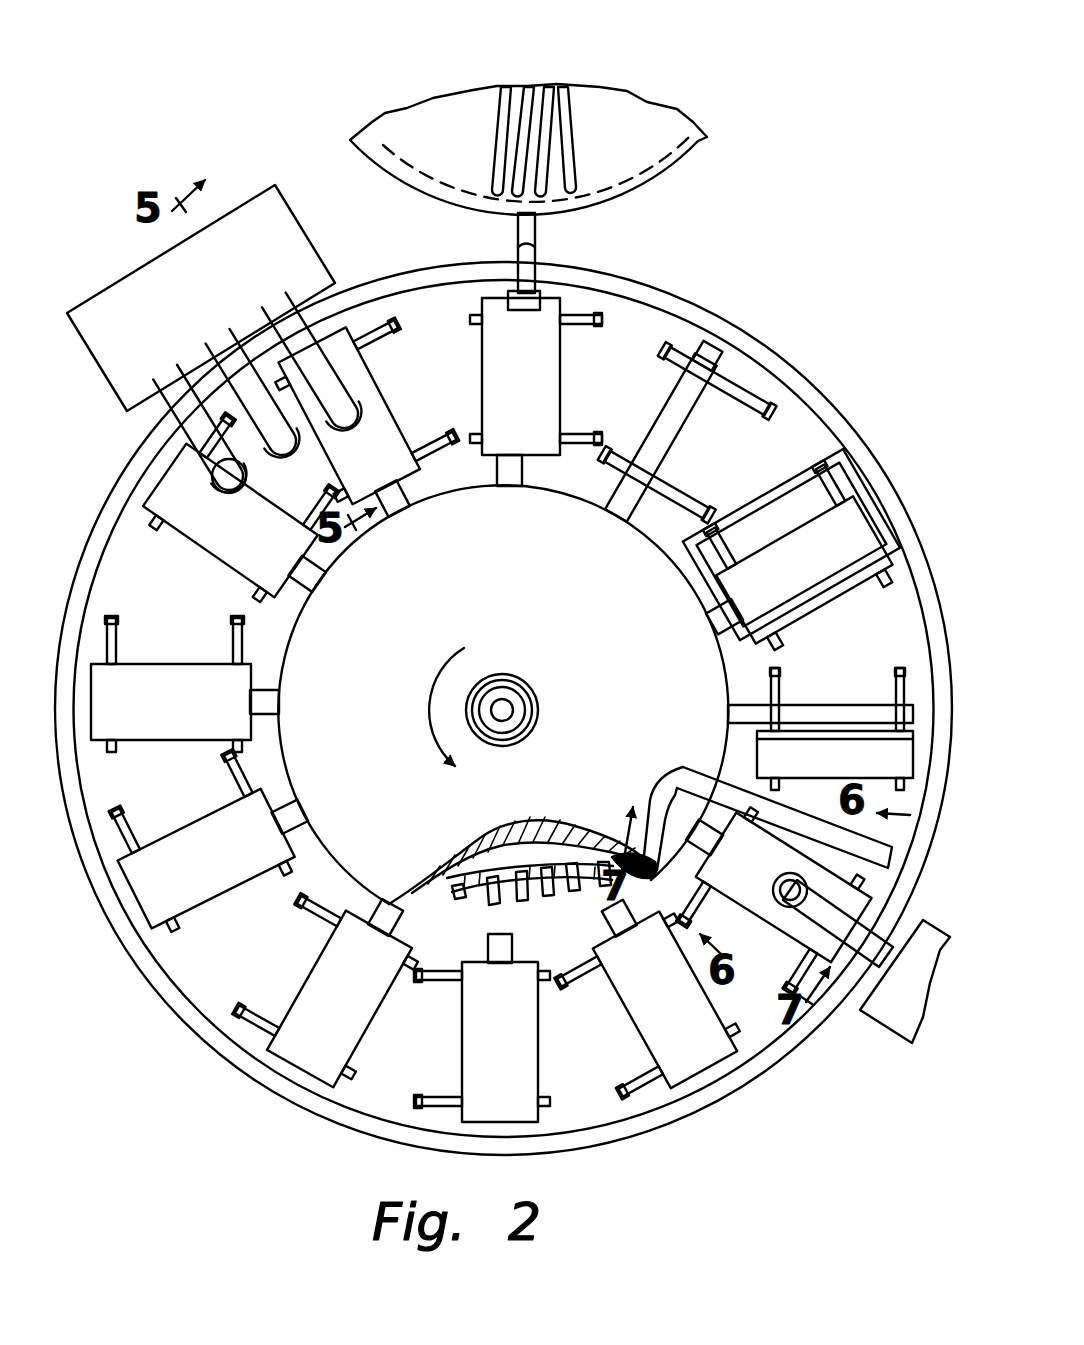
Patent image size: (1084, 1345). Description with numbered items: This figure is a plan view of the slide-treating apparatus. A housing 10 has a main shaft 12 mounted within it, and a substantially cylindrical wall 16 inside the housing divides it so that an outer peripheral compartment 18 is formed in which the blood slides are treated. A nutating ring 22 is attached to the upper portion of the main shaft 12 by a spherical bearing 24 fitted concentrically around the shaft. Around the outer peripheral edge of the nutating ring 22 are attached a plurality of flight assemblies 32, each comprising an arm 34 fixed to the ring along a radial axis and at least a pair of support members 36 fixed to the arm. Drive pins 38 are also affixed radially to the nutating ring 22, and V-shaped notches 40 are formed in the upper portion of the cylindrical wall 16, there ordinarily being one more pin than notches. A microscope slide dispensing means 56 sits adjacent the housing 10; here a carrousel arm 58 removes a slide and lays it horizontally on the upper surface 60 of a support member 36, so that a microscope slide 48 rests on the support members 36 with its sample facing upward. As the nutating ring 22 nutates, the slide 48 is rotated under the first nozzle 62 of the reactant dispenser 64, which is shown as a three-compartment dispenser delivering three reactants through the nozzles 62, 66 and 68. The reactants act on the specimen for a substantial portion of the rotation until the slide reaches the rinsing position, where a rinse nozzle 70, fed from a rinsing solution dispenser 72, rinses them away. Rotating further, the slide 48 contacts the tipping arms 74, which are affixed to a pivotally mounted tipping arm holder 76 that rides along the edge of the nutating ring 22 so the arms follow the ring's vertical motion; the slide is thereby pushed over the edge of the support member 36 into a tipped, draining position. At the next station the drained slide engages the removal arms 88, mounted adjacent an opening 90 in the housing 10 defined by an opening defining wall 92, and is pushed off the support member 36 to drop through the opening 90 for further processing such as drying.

The housing 10 is at (296, 1114).
The main shaft 12 is at (516, 710).
The cylindrical wall 16 is at (592, 882).
The peripheral compartment 18 is at (606, 1110).
The nutating ring 22 is at (342, 769).
The spherical bearing 24 is at (503, 691).
The flight assembly 32 is at (677, 399).
The arm 34 is at (522, 471).
The support members 36 is at (595, 318).
The drive pins 38 is at (570, 896).
The V-shaped notches 40 is at (472, 885).
The microscope slide 48 is at (556, 90).
The microscope slide dispensing means 56 is at (668, 170).
The carrousel arm 58 is at (536, 262).
The upper surface 60 is at (700, 360).
The first nozzle 62 is at (380, 407).
The reactant dispenser 64 is at (302, 243).
The nozzle 66 is at (285, 460).
The nozzle 68 is at (229, 494).
The rinse nozzle 70 is at (785, 908).
The rinsing solution dispenser 72 is at (895, 1025).
The tipping arms 74 is at (878, 835).
The tipping arm holder 76 is at (682, 772).
The removal arms 88 is at (732, 520).
The opening 90 is at (815, 492).
The opening defining wall 92 is at (705, 575).